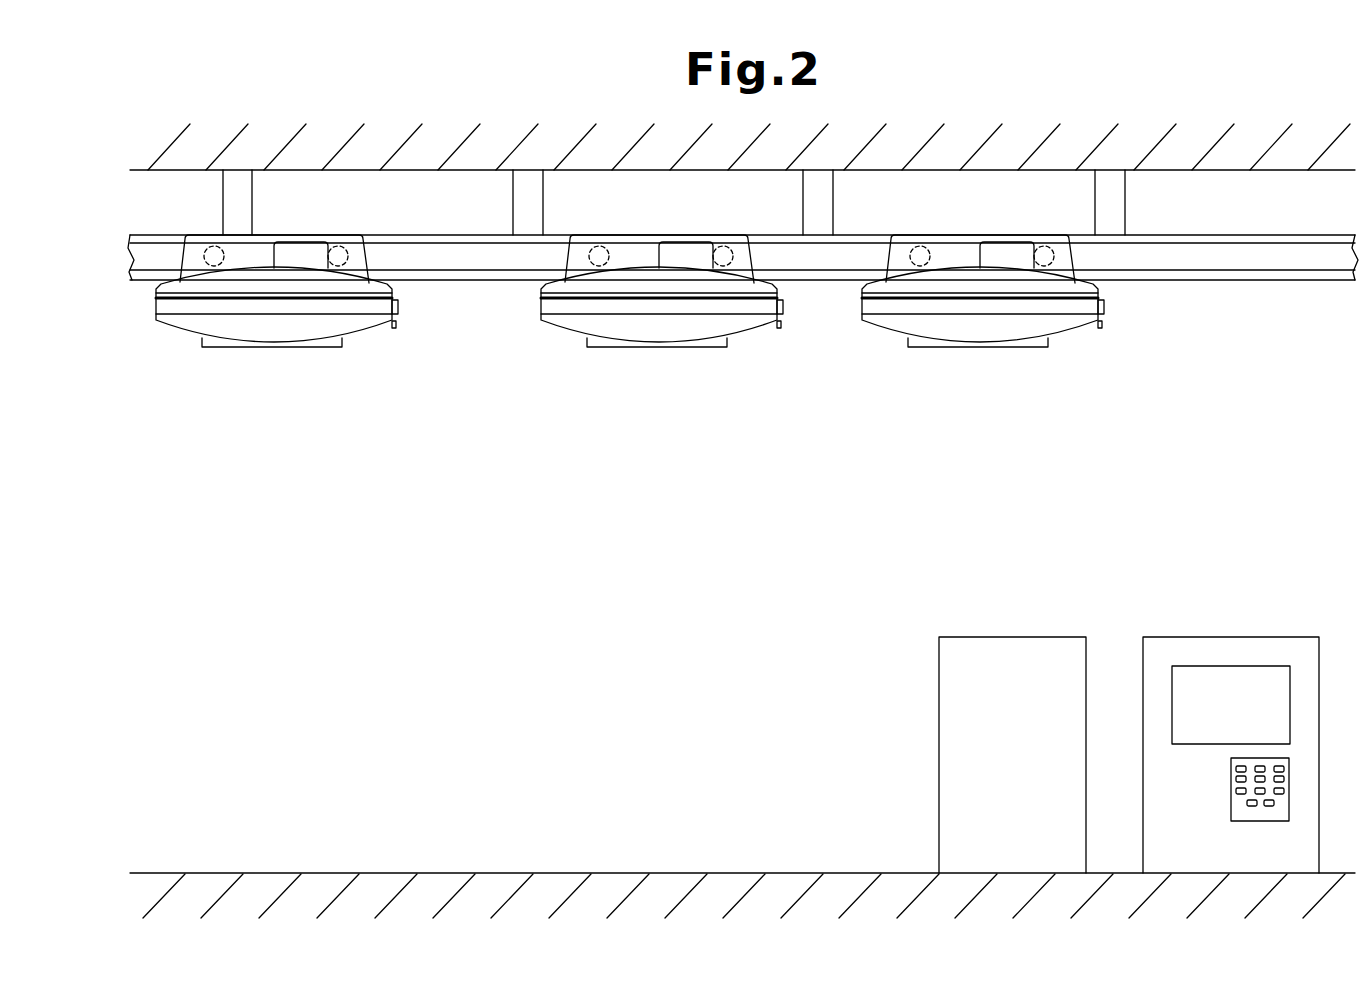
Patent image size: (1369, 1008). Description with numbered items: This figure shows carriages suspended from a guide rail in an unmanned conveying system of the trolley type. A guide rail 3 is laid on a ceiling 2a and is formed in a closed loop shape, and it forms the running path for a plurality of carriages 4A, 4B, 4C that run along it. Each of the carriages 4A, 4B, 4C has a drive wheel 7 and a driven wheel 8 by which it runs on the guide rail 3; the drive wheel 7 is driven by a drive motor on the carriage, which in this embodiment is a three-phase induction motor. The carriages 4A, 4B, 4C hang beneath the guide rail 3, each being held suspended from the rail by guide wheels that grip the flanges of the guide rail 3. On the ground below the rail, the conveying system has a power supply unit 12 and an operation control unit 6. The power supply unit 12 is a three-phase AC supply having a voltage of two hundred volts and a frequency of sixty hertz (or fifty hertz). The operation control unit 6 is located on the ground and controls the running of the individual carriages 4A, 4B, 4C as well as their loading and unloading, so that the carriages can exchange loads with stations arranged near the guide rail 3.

The ceiling 2a is at (1222, 170).
The guide rail 3 is at (1322, 276).
The carriage 4A is at (278, 312).
The carriage 4B is at (663, 312).
The carriage 4C is at (983, 312).
The drive wheel 7 is at (924, 231).
The driven wheel 8 is at (1045, 234).
The power supply unit 12 is at (1011, 637).
The operation control unit 6 is at (1233, 637).